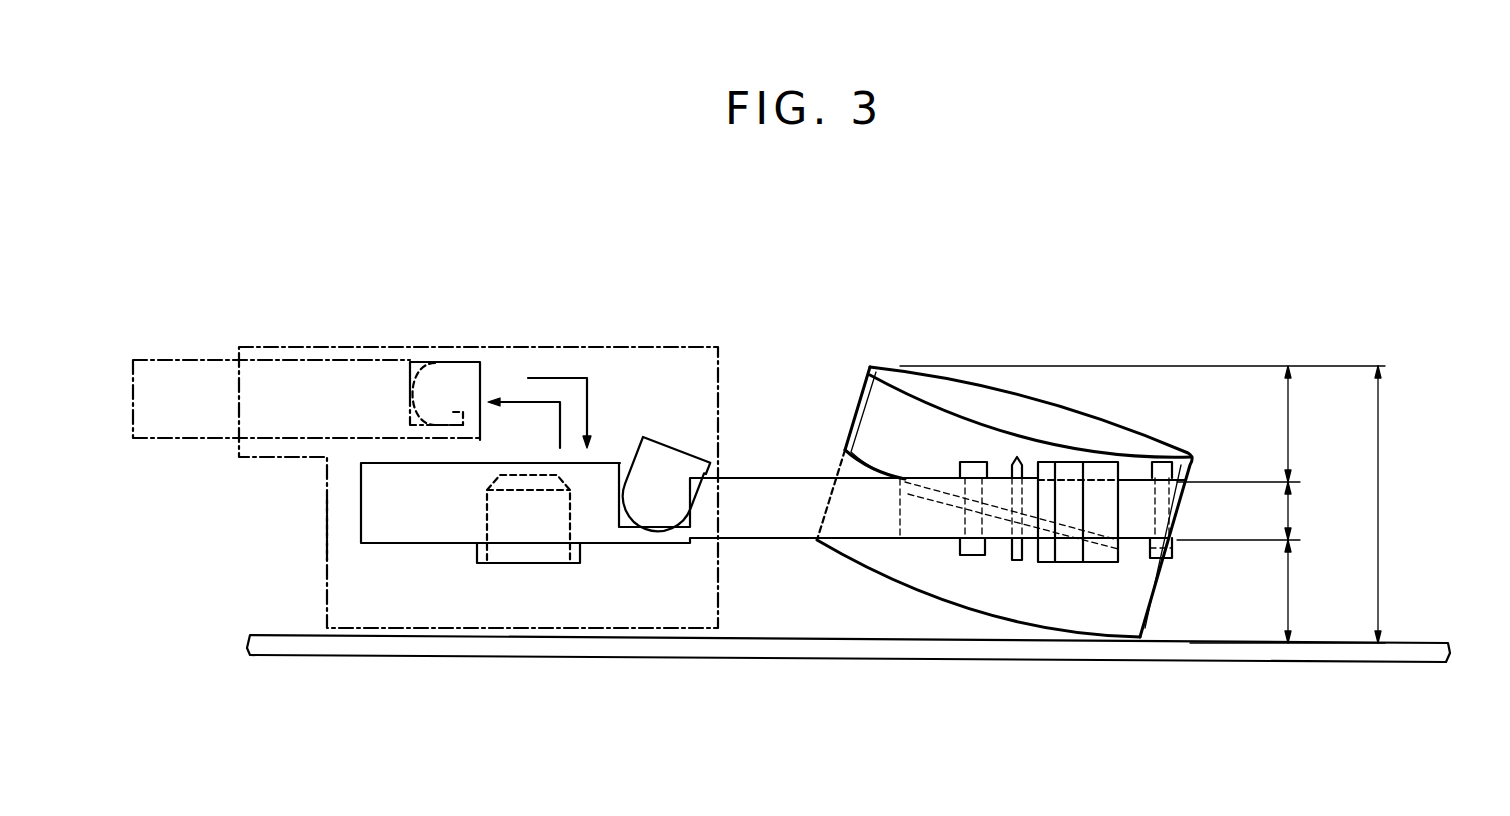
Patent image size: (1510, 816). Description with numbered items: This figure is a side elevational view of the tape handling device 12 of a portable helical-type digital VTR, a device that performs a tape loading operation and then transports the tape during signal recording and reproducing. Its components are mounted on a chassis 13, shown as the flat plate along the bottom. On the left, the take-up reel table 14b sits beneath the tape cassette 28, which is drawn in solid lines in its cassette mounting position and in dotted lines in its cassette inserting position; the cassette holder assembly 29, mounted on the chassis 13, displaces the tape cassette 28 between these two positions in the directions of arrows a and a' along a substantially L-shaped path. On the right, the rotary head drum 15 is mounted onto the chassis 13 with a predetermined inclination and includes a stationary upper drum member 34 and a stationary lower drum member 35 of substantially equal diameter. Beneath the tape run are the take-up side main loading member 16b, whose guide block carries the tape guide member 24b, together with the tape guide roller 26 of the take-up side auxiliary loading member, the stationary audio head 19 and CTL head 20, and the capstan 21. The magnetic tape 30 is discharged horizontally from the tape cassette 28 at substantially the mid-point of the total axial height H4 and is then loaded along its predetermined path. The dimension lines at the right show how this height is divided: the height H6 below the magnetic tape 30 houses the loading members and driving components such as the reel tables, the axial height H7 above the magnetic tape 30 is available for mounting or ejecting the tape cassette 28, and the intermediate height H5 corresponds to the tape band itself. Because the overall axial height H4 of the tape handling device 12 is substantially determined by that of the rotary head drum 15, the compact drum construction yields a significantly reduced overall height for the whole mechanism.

The tape handling device 12 is at (747, 323).
The chassis 13 is at (795, 650).
The take-up reel table 14b is at (530, 535).
The rotary head drum 15 is at (1055, 423).
The main loading member 16b is at (1175, 566).
The audio head 19 is at (1102, 560).
The CTL head 20 is at (1067, 560).
The capstan 21 is at (1015, 562).
The tape guide member 24b is at (1163, 465).
The tape guide roller 26 is at (970, 552).
The tape cassette 28 is at (380, 510).
The cassette holder assembly 29 is at (310, 546).
The magnetic tape 30 is at (788, 490).
The stationary upper drum member 34 is at (865, 395).
The stationary lower drum member 35 is at (912, 567).
The direction arrow a is at (559, 370).
The direction arrow a' is at (524, 370).
The overall axial height H4 is at (1378, 505).
The height H5 is at (1293, 510).
The height below the magnetic tape H6 is at (1293, 590).
The axial height above the magnetic tape H7 is at (1293, 433).